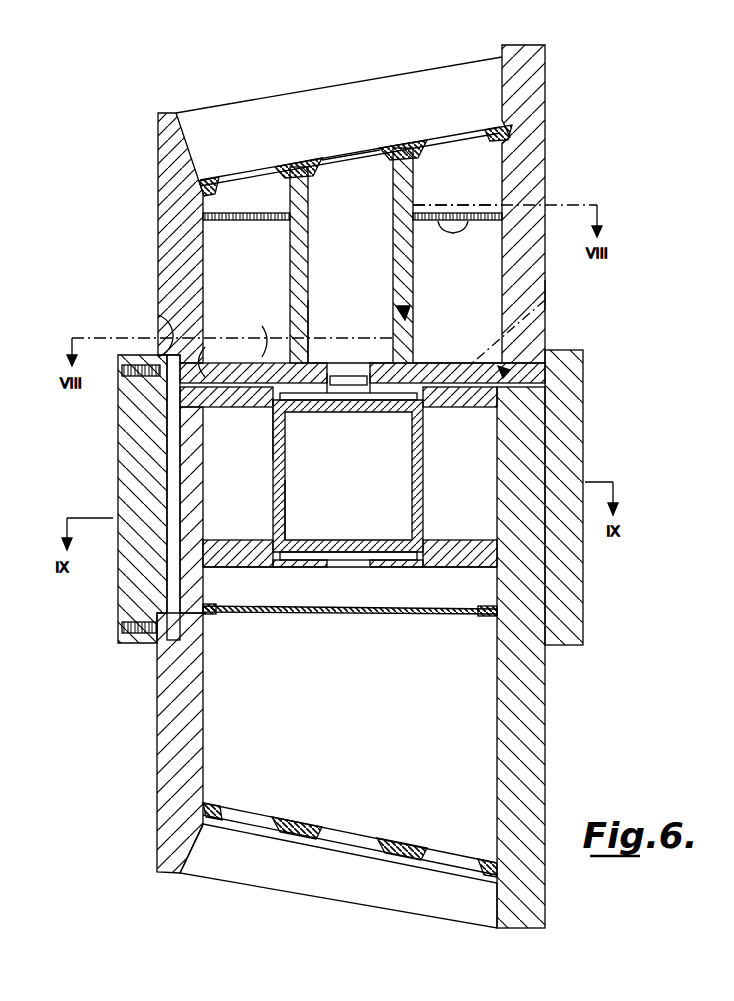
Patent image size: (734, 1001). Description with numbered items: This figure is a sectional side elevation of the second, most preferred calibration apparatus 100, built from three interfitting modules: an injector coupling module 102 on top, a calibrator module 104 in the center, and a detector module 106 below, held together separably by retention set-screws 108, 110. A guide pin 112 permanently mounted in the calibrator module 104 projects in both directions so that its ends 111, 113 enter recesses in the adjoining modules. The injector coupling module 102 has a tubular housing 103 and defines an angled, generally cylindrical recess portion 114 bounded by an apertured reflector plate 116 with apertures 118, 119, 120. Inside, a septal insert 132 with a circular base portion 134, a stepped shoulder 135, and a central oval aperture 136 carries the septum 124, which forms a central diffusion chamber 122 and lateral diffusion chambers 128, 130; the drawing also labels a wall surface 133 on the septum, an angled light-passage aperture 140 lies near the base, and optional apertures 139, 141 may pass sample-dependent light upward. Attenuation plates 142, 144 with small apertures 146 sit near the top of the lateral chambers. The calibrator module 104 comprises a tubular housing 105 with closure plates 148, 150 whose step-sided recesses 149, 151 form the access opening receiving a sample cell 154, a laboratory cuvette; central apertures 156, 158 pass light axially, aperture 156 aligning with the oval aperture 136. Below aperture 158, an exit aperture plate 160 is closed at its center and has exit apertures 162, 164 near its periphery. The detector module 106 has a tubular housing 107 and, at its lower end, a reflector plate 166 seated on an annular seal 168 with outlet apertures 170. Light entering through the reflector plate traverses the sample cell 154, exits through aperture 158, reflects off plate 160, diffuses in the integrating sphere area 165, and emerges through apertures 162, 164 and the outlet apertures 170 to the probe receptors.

The calibration apparatus 100 is at (368, 100).
The injector coupling module 102 is at (150, 190).
The tubular housing 103 is at (536, 112).
The calibrator module 104 is at (110, 450).
The tubular housing 105 is at (583, 440).
The detector module 106 is at (148, 744).
The tubular housing 107 is at (540, 730).
The retention set-screw 108 is at (122, 365).
The retention set-screw 110 is at (122, 622).
The guide pin end 111 is at (160, 322).
The guide pin 112 is at (205, 447).
The guide pin end 113 is at (167, 648).
The recess portion 114 is at (292, 150).
The reflector plate 116 is at (340, 146).
The aperture 118 is at (226, 168).
The aperture 119 is at (366, 141).
The aperture 120 is at (450, 128).
The diffusion chamber 122 is at (328, 225).
The septum 124 is at (308, 286).
The lateral diffusion chamber 128 is at (226, 252).
The lateral diffusion chamber 130 is at (438, 302).
The septal insert 132 is at (546, 327).
The wall surface 133 is at (290, 322).
The base portion 134 is at (420, 364).
The shoulder 135 is at (205, 352).
The central aperture 136 is at (338, 370).
The aperture 139 is at (247, 332).
The light-passage aperture 140 is at (393, 328).
The aperture 141 is at (543, 301).
The attenuation plate 142 is at (290, 213).
The attenuation plate 144 is at (463, 216).
The apertures 146 is at (453, 241).
The closure plate 148 is at (480, 408).
The recess 149 is at (282, 440).
The closure plate 150 is at (465, 540).
The recess 151 is at (285, 516).
The sample cell 154 is at (341, 475).
The central aperture 156 is at (338, 401).
The central aperture 158 is at (360, 566).
The exit aperture plate 160 is at (330, 614).
The exit aperture 162 is at (232, 614).
The exit aperture 164 is at (455, 615).
The integrating sphere area 165 is at (261, 592).
The reflector plate 166 is at (445, 869).
The seal 168 is at (338, 876).
The outlet apertures 170 is at (395, 845).